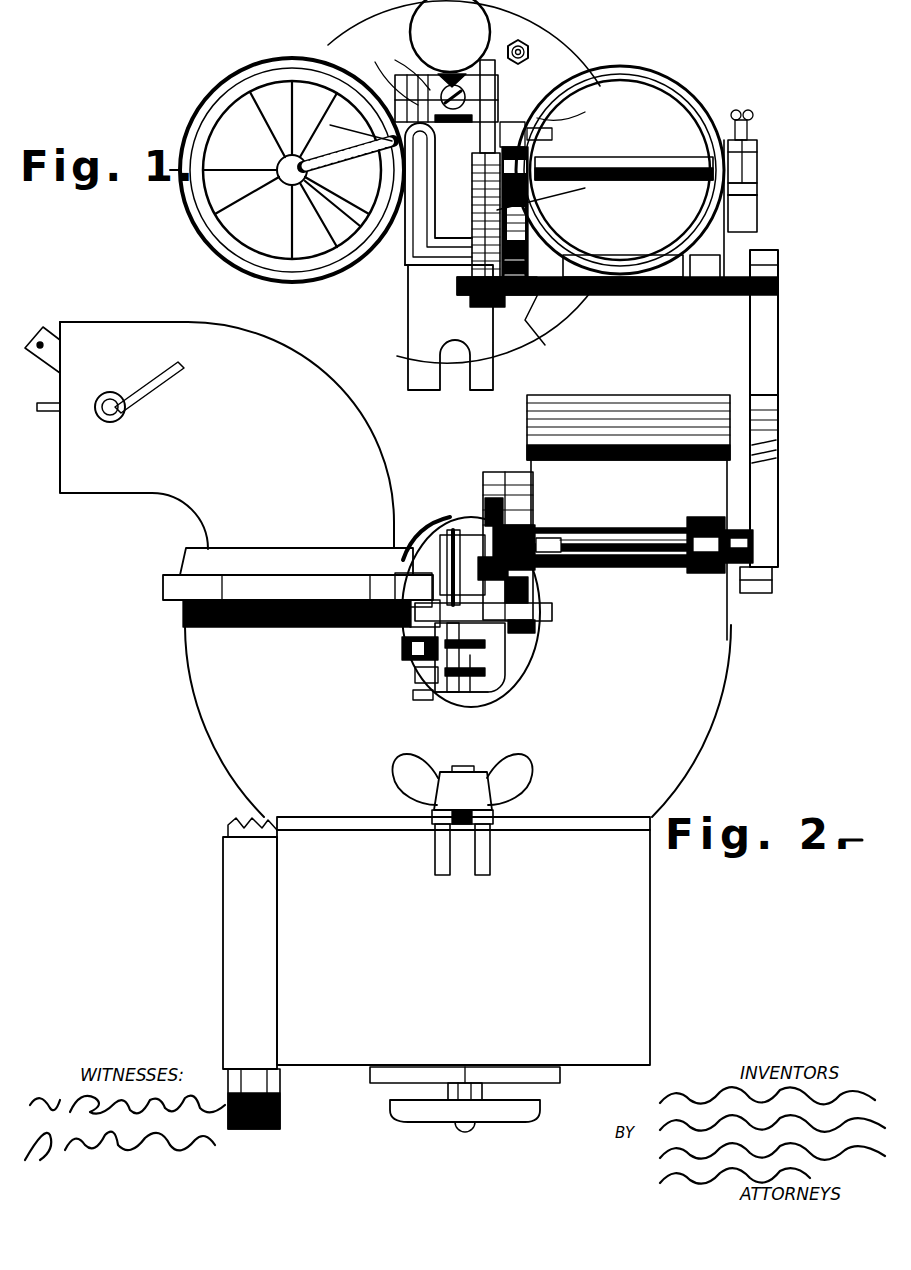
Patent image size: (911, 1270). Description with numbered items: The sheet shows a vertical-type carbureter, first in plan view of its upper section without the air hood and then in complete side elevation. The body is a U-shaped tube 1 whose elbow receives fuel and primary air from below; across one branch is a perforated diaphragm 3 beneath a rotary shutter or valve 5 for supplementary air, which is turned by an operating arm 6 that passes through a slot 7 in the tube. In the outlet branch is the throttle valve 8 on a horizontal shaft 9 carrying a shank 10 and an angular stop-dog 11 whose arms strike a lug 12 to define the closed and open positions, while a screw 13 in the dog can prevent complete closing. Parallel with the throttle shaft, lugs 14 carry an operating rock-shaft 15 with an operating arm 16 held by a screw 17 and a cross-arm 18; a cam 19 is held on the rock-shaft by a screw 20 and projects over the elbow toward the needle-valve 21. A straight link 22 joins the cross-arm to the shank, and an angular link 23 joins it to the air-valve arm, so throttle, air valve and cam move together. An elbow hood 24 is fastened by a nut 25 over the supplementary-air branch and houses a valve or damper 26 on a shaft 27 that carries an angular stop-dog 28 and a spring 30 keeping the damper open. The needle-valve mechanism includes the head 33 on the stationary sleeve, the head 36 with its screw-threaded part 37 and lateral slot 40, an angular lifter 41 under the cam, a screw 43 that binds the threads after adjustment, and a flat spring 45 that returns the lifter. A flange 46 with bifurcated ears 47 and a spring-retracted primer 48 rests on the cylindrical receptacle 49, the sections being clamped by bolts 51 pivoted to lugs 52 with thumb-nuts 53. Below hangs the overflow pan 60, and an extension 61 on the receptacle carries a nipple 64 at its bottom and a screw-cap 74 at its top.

In FIG. 2, the tube 1 is at (458, 721).
In FIG. 1, the perforated diaphragm 3 is at (287, 170).
In FIG. 1, the rotary shutter or valve 5 is at (332, 206).
In FIG. 1, the operating arm 6 is at (348, 171).
In FIG. 2, the operating arm 6 is at (415, 672).
In FIG. 1, the slot 7 is at (511, 124).
In FIG. 2, the slot 7 is at (402, 650).
In FIG. 1, the throttle valve 8 is at (620, 174).
In FIG. 1, the horizontal shaft 9 is at (668, 178).
In FIG. 1, the shank 10 is at (519, 146).
In FIG. 1, the angular stop-dog 11 is at (757, 154).
In FIG. 2, the angular stop-dog 11 is at (752, 593).
In FIG. 1, the lug 12 is at (757, 190).
In FIG. 1, the screw 13 is at (748, 127).
In FIG. 1, the lugs 14 is at (580, 300).
In FIG. 2, the lugs 14 is at (570, 567).
In FIG. 1, the operating rock-shaft 15 is at (623, 289).
In FIG. 2, the operating rock-shaft 15 is at (625, 567).
In FIG. 1, the operating arm 16 is at (778, 337).
In FIG. 2, the operating arm 16 is at (778, 488).
In FIG. 2, the screw 17 is at (778, 548).
In FIG. 1, the cross-arm 18 is at (553, 325).
In FIG. 2, the cross-arm 18 is at (533, 525).
In FIG. 1, the cam 19 is at (473, 231).
In FIG. 2, the cam 19 is at (505, 578).
In FIG. 1, the screw 20 is at (480, 310).
In FIG. 2, the screw 20 is at (485, 512).
In FIG. 1, the needle-valve 21 is at (450, 43).
In FIG. 2, the needle-valve 21 is at (447, 570).
In FIG. 1, the straight link 22 is at (545, 201).
In FIG. 2, the straight link 22 is at (492, 472).
In FIG. 1, the angular link 23 is at (425, 186).
In FIG. 2, the elbow hood 24 is at (227, 435).
In FIG. 2, the nut 25 is at (298, 587).
In FIG. 2, the valve or damper 26 is at (46, 411).
In FIG. 2, the shaft 27 is at (116, 418).
In FIG. 2, the angular stop-dog 28 is at (43, 327).
In FIG. 2, the spring 30 is at (160, 386).
In FIG. 1, the head 33 is at (439, 194).
In FIG. 2, the head 33 is at (470, 694).
In FIG. 1, the head 36 is at (575, 109).
In FIG. 2, the head 36 is at (475, 665).
In FIG. 1, the screw-threaded part 37 is at (465, 97).
In FIG. 1, the lateral slot 40 is at (372, 131).
In FIG. 2, the lateral slot 40 is at (500, 660).
In FIG. 1, the angular lifter 41 is at (570, 127).
In FIG. 2, the angular lifter 41 is at (500, 640).
In FIG. 1, the screw 43 is at (374, 71).
In FIG. 2, the screw 43 is at (410, 620).
In FIG. 1, the flat spring 45 is at (401, 58).
In FIG. 2, the flat spring 45 is at (420, 700).
In FIG. 1, the flange 46 is at (464, 182).
In FIG. 2, the flange 46 is at (615, 818).
In FIG. 1, the bifurcated ears 47 is at (483, 366).
In FIG. 2, the bifurcated ears 47 is at (460, 785).
In FIG. 1, the spring-retracted primer 48 is at (530, 52).
In FIG. 2, the cylindrical receptacle 49 is at (463, 941).
In FIG. 2, the bolts 51 is at (480, 840).
In FIG. 2, the lugs 52 is at (450, 876).
In FIG. 2, the thumb-nuts 53 is at (463, 788).
In FIG. 2, the overflow pan 60 is at (428, 1105).
In FIG. 2, the extension 61 is at (250, 953).
In FIG. 2, the nipple 64 is at (280, 1110).
In FIG. 2, the screw-cap 74 is at (234, 816).